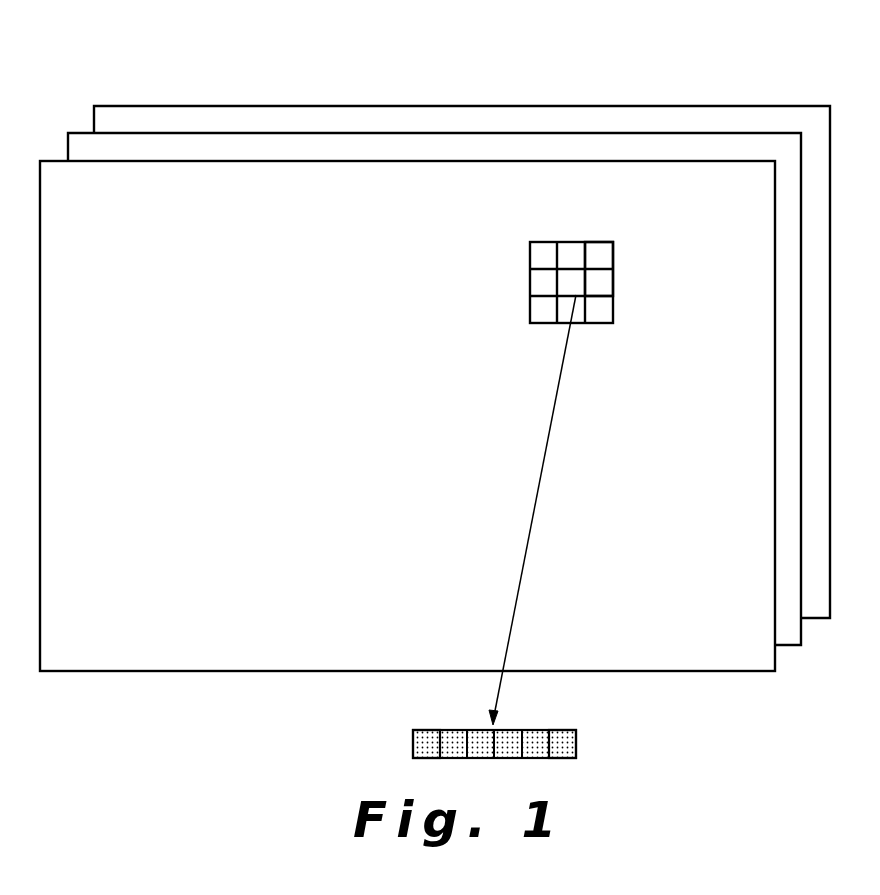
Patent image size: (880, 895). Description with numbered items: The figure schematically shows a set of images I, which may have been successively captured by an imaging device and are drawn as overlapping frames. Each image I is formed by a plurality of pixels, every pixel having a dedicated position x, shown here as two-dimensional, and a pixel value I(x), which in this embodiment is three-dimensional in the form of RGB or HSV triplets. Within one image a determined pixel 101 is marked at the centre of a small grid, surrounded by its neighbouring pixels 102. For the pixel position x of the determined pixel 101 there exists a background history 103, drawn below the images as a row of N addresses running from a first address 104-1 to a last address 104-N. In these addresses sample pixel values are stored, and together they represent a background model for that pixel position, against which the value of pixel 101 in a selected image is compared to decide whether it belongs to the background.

The image I is at (575, 161).
The determined pixel 101 is at (572, 283).
The neighbouring pixels 102 is at (598, 285).
The background history 103 is at (597, 741).
The first address 104-1 is at (413, 740).
The N-th address 104-N is at (560, 752).